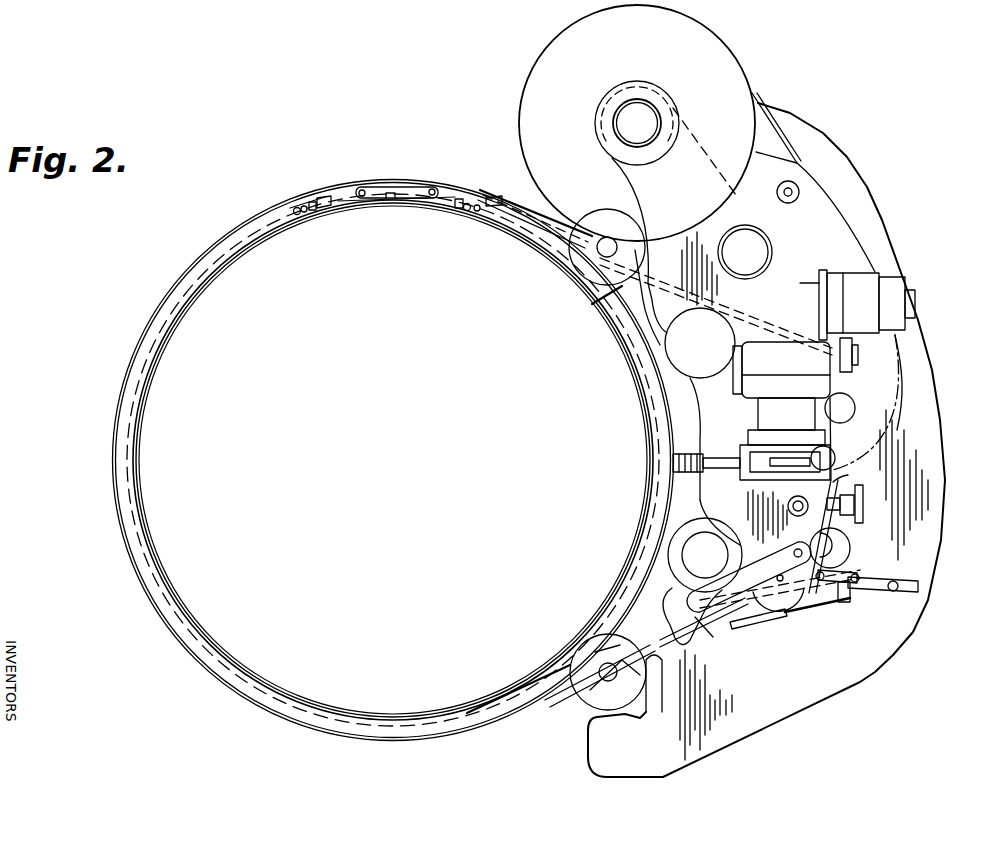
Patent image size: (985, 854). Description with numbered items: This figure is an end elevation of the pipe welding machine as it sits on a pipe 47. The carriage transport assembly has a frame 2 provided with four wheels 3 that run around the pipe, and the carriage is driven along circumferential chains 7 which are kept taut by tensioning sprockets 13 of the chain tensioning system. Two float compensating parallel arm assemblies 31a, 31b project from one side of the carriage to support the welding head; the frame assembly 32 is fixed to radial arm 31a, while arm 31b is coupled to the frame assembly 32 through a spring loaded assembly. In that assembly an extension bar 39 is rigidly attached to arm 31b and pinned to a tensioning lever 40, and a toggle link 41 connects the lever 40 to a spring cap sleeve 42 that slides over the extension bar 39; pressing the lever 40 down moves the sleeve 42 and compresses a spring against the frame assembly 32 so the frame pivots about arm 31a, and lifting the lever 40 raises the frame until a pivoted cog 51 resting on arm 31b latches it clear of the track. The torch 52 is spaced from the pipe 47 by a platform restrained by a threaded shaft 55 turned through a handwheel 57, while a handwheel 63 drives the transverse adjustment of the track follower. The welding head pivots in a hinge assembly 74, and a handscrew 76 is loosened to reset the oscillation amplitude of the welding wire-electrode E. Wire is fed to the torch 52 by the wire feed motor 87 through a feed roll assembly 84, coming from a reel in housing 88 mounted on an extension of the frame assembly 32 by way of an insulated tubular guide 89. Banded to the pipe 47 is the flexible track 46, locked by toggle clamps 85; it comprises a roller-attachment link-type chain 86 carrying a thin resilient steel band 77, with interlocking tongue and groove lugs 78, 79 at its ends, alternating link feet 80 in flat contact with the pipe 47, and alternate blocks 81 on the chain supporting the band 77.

The frame 2 is at (893, 645).
The wheels 3 is at (592, 262).
The circumferential chains 7 is at (850, 463).
The tensioning sprockets 13 is at (842, 548).
The float compensating parallel arm assembly 31a is at (760, 245).
The float compensating parallel arm assembly 31b is at (688, 553).
The frame assembly 32 is at (855, 207).
The extension bar 39 is at (840, 590).
The tensioning lever 40 is at (800, 614).
The toggle link 41 is at (842, 598).
The spring cap sleeve 42 is at (822, 610).
The track 46 is at (292, 194).
The pipe 47 is at (137, 445).
The pivoted cog 51 is at (700, 620).
The torch 52 is at (673, 456).
The threaded shaft 55 is at (848, 475).
The handwheel 57 is at (864, 504).
The handwheel 63 is at (680, 353).
The hinge assembly 74 is at (850, 360).
The handscrew 76 is at (845, 408).
The band 77 is at (182, 283).
The tongue and groove lug 78 is at (352, 201).
The tongue and groove lug 79 is at (446, 201).
The link feet 80 is at (476, 211).
The blocks 81 is at (500, 196).
The feed roll assembly 84 is at (771, 331).
The toggle clamps 85 is at (333, 193).
The roller-attachment link-type chain 86 is at (312, 212).
The wire feed motor 87 is at (858, 280).
The housing 88 is at (531, 118).
The insulated tubular guide 89 is at (905, 377).
The welding wire-electrode E is at (833, 192).